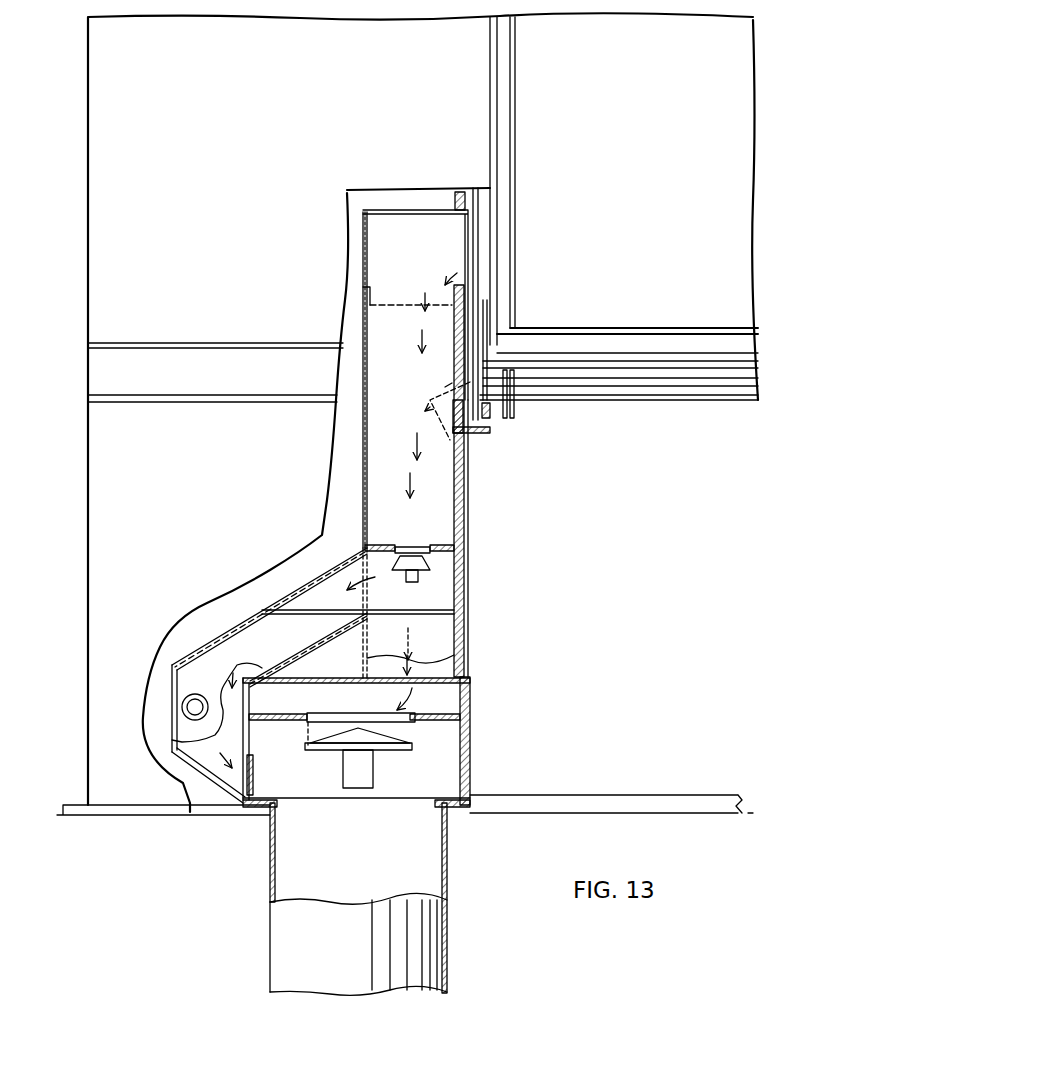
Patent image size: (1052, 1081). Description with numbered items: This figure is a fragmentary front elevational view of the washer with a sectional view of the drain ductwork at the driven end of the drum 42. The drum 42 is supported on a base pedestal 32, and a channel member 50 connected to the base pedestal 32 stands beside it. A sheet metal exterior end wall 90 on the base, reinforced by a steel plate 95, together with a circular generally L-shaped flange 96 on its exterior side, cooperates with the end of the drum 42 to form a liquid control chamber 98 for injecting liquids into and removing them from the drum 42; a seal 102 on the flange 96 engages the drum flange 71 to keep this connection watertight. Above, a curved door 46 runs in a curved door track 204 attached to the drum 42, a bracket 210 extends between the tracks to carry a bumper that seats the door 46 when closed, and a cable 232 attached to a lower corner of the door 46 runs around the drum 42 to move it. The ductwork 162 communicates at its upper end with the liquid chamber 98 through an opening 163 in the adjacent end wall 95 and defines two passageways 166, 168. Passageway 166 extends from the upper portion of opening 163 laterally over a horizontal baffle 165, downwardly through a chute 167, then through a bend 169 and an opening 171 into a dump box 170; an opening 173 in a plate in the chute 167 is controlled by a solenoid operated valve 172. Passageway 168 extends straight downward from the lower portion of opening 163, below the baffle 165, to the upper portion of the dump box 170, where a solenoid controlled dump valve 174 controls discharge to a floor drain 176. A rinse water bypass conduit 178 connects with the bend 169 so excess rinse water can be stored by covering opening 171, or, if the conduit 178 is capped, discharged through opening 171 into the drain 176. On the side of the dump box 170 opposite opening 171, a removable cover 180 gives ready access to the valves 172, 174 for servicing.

The base pedestal 32 is at (80, 592).
The drum 42 is at (678, 405).
The curved door 46 is at (697, 171).
The channel member 50 is at (193, 347).
The drum flange 71 is at (480, 244).
The exterior end wall 90 is at (470, 566).
The steel plate 95 is at (466, 489).
The L-shaped flange 96 is at (490, 432).
The liquid control chamber 98 is at (476, 230).
The seal 102 is at (487, 412).
The ductwork 162 is at (360, 325).
The opening 163 is at (460, 217).
The horizontal baffle 165 is at (390, 300).
The passageway 166 is at (410, 448).
The chute 167 is at (447, 536).
The passageway 168 is at (462, 453).
The bend 169 is at (237, 638).
The dump box 170 is at (452, 735).
The opening 171 is at (250, 768).
The solenoid operated valve 172 is at (383, 567).
The opening 173 is at (425, 547).
The dump valve 174 is at (385, 750).
The floor drain 176 is at (430, 870).
The rinse water bypass conduit 178 is at (185, 715).
The removable cover 180 is at (471, 765).
The door track 204 is at (510, 97).
The bracket 210 is at (678, 348).
The cable 232 is at (520, 395).